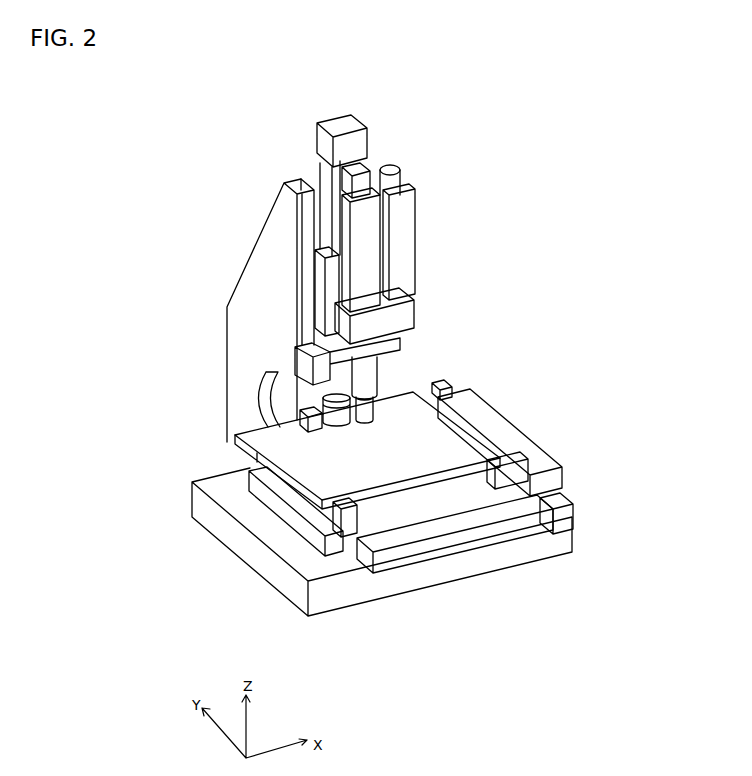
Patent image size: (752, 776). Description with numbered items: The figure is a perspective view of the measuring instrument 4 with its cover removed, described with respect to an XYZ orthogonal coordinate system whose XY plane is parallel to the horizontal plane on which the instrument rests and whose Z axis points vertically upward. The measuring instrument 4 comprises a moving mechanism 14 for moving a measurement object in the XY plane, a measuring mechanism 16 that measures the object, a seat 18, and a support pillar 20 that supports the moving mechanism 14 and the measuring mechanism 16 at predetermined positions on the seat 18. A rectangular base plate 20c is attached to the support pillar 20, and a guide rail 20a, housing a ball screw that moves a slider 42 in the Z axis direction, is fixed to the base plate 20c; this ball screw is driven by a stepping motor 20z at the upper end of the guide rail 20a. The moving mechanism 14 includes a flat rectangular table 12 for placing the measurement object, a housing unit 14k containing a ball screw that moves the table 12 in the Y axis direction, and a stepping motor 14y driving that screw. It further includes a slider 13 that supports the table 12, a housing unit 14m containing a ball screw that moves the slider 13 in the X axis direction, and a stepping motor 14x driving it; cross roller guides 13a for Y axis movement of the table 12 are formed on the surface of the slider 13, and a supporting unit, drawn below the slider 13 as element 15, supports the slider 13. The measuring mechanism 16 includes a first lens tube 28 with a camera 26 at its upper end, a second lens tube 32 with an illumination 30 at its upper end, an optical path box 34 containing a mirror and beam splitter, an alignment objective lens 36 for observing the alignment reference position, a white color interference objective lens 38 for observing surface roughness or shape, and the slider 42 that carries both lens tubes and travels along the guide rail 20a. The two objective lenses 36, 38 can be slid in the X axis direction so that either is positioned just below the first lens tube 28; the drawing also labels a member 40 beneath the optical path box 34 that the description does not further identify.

The measuring instrument 4 is at (469, 84).
The table 12 is at (263, 440).
The slider 13 is at (440, 497).
The cross roller guides 13a is at (515, 482).
The moving mechanism 14 is at (165, 402).
The housing unit 14k is at (533, 452).
The housing unit 14m is at (497, 535).
The stepping motor 14x is at (565, 513).
The stepping motor 14y is at (452, 388).
The guide rail 15 is at (313, 538).
The measuring mechanism 16 is at (532, 115).
The seat 18 is at (322, 603).
The support pillar 20 is at (237, 325).
The guide rail 20a is at (317, 178).
The base plate 20c is at (308, 217).
The stepping motor 20z is at (343, 122).
The camera 26 is at (367, 170).
The first lens tube 28 is at (347, 228).
The illumination 30 is at (393, 167).
The second lens tube 32 is at (408, 242).
The optical path box 34 is at (410, 320).
The alignment objective lens 36 is at (372, 387).
The white color interference objective lens 38 is at (347, 430).
The bracket 40 is at (298, 367).
The slider 42 is at (325, 312).